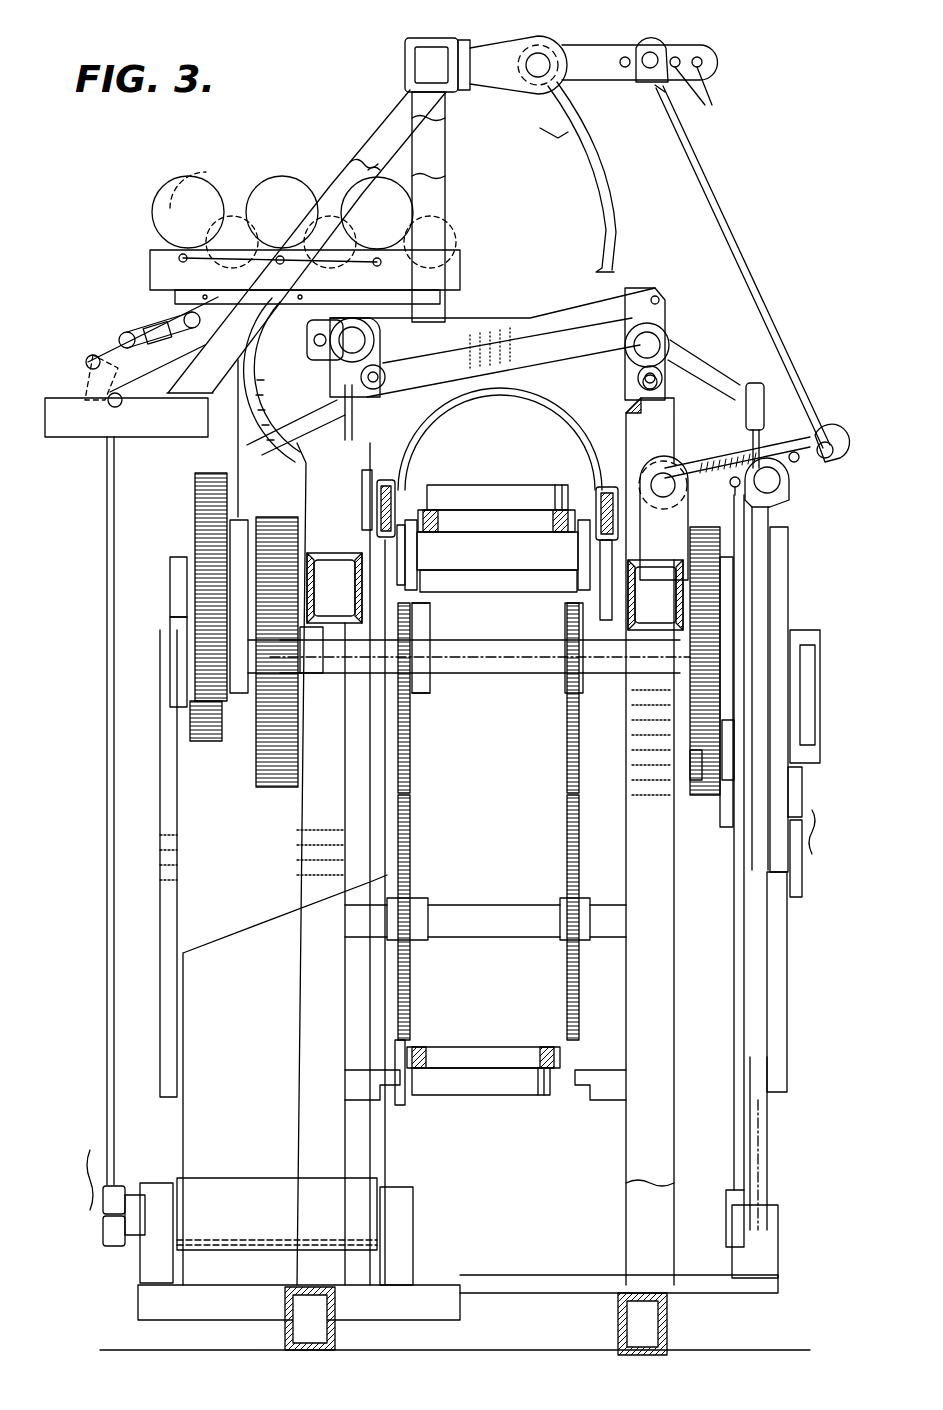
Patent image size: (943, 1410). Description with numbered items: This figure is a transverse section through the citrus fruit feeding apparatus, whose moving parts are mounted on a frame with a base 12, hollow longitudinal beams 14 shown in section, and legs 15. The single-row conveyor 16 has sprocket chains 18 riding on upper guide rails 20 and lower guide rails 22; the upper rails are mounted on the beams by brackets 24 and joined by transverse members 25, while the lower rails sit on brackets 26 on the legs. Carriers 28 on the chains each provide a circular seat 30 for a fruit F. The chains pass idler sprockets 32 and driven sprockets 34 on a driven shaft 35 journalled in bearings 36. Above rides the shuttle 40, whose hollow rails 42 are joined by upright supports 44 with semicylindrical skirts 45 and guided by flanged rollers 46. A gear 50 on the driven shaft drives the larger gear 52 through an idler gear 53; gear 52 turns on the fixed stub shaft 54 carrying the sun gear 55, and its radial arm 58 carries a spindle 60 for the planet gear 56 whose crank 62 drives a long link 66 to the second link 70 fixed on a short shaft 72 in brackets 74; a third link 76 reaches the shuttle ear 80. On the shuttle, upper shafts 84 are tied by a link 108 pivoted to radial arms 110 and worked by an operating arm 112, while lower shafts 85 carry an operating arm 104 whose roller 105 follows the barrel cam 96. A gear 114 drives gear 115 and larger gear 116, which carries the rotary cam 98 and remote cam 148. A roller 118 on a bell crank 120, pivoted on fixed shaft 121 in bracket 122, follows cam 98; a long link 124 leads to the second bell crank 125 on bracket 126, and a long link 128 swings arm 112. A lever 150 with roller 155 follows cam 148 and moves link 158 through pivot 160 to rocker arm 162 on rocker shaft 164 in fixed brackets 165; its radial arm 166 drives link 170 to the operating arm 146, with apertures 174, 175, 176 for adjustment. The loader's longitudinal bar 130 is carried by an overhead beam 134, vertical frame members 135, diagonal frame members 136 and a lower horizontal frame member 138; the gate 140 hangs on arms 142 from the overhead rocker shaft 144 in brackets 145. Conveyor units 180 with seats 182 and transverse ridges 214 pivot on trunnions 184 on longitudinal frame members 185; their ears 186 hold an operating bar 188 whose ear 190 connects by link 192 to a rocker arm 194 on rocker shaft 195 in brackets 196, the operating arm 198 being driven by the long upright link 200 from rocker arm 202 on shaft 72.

The base 12 is at (468, 1300).
The hollow longitudinal beams 14 is at (340, 553).
The legs 15 is at (300, 1068).
The single-row conveyor 16 is at (512, 476).
The sprocket chains 18 is at (415, 500).
The upper guide rails 20 is at (417, 545).
The lower guide rails 22 is at (405, 1100).
The brackets 24 is at (578, 545).
The transverse members 25 is at (530, 570).
The brackets 26 is at (366, 1095).
The carriers 28 is at (502, 520).
The circular seat 30 is at (460, 484).
The idler sprockets 32 is at (412, 856).
The driven sprockets 34 is at (412, 768).
The driven shaft 35 is at (470, 676).
The bearings 36 is at (430, 630).
The shuttle 40 is at (500, 325).
The hollow longitudinal rails 42 is at (377, 468).
The upright supports 44 is at (549, 363).
The semicylindrical skirts 45 is at (540, 405).
The flanged rollers 46 is at (365, 530).
The gear 50 is at (295, 690).
The larger gear 52 is at (292, 517).
The idler gear 53 is at (275, 787).
The fixed stub shaft 54 is at (222, 657).
The sun gear 55 is at (205, 742).
The planet gear 56 is at (195, 495).
The radial arm 58 is at (240, 525).
The spindle 60 is at (225, 556).
The crank 62 is at (190, 590).
The long link 66 is at (168, 815).
The second link 70 is at (245, 935).
The short shaft 72 is at (180, 1218).
The brackets 74 is at (140, 1255).
The third link 76 is at (350, 586).
The ear 80 is at (405, 598).
The upper shafts 84 is at (330, 340).
The lower shafts 85 is at (642, 383).
The barrel cam 96 is at (280, 440).
The rotary cam 98 is at (790, 614).
The radial operating arm 104 is at (305, 345).
The roller 105 is at (247, 442).
The link 108 is at (575, 310).
The radial arms 110 is at (378, 342).
The radial operating arm 112 is at (720, 375).
The gear 114 is at (690, 690).
The gear 115 is at (688, 800).
The larger gear 116 is at (690, 538).
The roller 118 is at (788, 740).
The bell crank 120 is at (803, 780).
The fixed shaft 121 is at (786, 853).
The bracket 122 is at (816, 692).
The long link 124 is at (787, 985).
The second bell crank 125 is at (770, 1165).
The bracket 126 is at (778, 1228).
The long link 128 is at (746, 400).
The longitudinal bar 130 is at (462, 270).
The overhead beam 134 is at (405, 60).
The vertical frame members 135 is at (440, 184).
The diagonal frame members 136 is at (396, 114).
The lower horizontal frame member 138 is at (78, 428).
The gate 140 is at (605, 208).
The arms 142 is at (597, 142).
The overhead rocker shaft 144 is at (545, 58).
The brackets 145 is at (495, 48).
The radial operating arm 146 is at (612, 44).
The remote cam 148 is at (735, 598).
The lever 150 is at (726, 785).
The roller 155 is at (688, 770).
The link 158 is at (770, 562).
The pivot 160 is at (772, 492).
The rocker arm 162 is at (789, 488).
The rocker shaft 164 is at (690, 480).
The fixed brackets 165 is at (655, 475).
The radial arm 166 is at (792, 470).
The link 170 is at (728, 216).
The apertures 174 is at (733, 500).
The apertures 175 is at (818, 438).
The apertures 176 is at (719, 92).
The conveyor units 180 is at (232, 215).
The seats 182 is at (172, 186).
The trunnions 184 is at (480, 242).
The longitudinal frame members 185 is at (165, 278).
The ear 186 is at (188, 212).
The longitudinal operating bar 188 is at (377, 213).
The ear 190 is at (180, 316).
The link 192 is at (169, 344).
The rocker arm 194 is at (108, 338).
The rocker shaft 195 is at (88, 356).
The brackets 196 is at (80, 378).
The operating arm 198 is at (112, 376).
The long upright link 200 is at (106, 657).
The rocker arm 202 is at (130, 1190).
The transverse ridge 214 is at (150, 222).
The fruit F is at (150, 200).